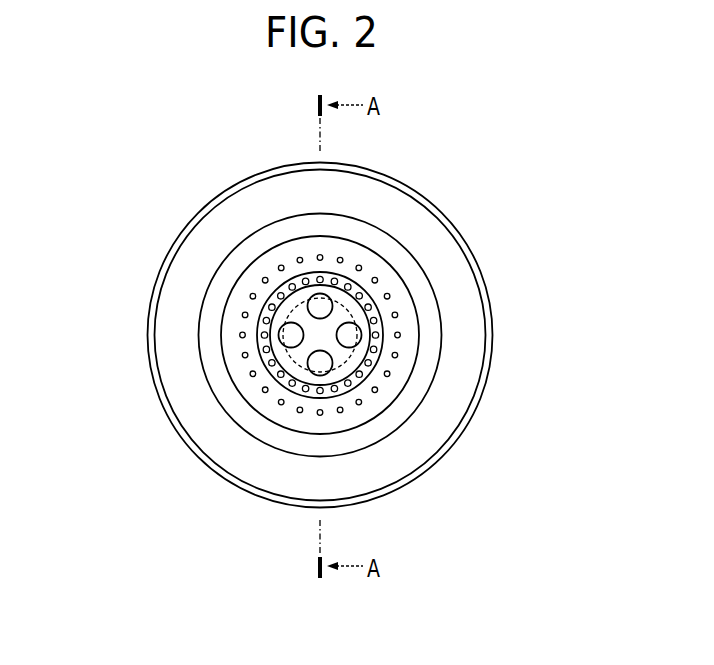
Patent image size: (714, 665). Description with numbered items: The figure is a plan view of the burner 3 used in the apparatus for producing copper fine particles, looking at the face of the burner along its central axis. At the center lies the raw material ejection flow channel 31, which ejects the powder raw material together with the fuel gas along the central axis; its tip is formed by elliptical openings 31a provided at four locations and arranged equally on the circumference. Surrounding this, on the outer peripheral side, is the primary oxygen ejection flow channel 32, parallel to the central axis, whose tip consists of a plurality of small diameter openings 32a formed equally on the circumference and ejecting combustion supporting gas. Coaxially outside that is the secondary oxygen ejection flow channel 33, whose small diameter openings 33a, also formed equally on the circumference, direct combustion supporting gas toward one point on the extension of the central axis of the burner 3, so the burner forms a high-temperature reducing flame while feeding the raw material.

The burner 3 is at (152, 155).
The raw material ejection flow channel 31 is at (280, 333).
The elliptical openings 31a is at (343, 331).
The primary oxygen ejection flow channel 32 is at (320, 335).
The small diameter openings 32a is at (369, 307).
The secondary oxygen ejection flow channel 33 is at (320, 335).
The small diameter openings 33a is at (359, 267).